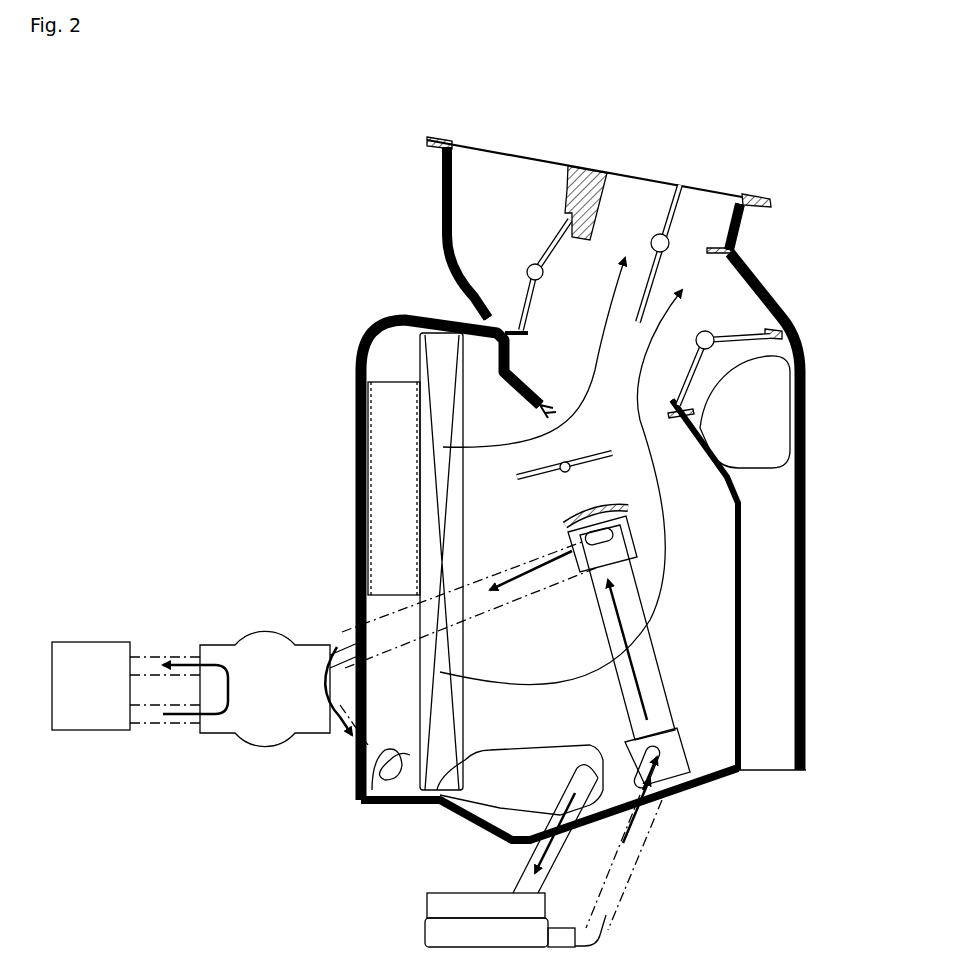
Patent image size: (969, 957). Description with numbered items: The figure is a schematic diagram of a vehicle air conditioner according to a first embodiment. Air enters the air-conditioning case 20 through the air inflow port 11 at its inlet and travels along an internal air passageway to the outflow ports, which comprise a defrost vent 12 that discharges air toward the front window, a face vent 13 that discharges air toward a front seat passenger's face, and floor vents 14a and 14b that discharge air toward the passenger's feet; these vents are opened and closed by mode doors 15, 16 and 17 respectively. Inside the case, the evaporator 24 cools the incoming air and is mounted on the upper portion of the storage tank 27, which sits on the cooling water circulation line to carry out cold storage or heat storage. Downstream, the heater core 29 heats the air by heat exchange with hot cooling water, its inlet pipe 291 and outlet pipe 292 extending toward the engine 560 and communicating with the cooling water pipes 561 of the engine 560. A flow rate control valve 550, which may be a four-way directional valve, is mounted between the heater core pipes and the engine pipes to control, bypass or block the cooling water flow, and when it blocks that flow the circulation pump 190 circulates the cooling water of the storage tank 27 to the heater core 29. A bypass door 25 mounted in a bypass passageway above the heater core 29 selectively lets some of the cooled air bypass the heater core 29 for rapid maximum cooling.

The air inflow port 11 is at (390, 447).
The defrost vent 12 is at (480, 172).
The face vent 13 is at (708, 212).
The floor vent 14a is at (770, 415).
The floor vent 14b is at (770, 717).
The mode door 15 is at (547, 240).
The mode door 16 is at (668, 212).
The mode door 17 is at (735, 340).
The air-conditioning case 20 is at (362, 400).
The evaporator 24 is at (440, 357).
The bypass door 25 is at (517, 477).
The storage tank 27 is at (480, 800).
The heater core 29 is at (660, 700).
The circulation pump 190 is at (425, 930).
The inlet pipe 291 is at (628, 860).
The outlet pipe 292 is at (540, 560).
The flow rate control valve 550 is at (265, 636).
The engine 560 is at (108, 642).
The cooling water pipes 561 is at (148, 657).